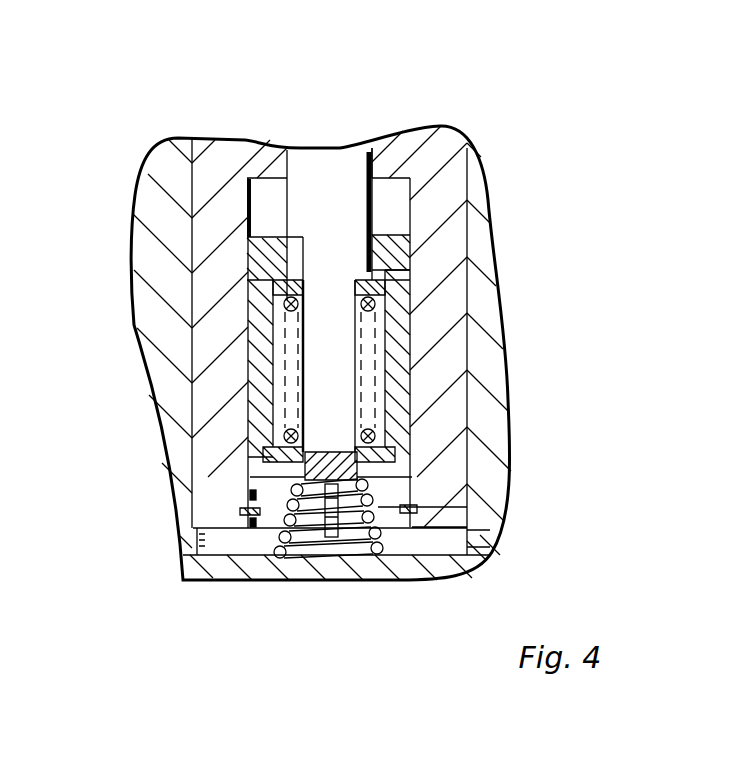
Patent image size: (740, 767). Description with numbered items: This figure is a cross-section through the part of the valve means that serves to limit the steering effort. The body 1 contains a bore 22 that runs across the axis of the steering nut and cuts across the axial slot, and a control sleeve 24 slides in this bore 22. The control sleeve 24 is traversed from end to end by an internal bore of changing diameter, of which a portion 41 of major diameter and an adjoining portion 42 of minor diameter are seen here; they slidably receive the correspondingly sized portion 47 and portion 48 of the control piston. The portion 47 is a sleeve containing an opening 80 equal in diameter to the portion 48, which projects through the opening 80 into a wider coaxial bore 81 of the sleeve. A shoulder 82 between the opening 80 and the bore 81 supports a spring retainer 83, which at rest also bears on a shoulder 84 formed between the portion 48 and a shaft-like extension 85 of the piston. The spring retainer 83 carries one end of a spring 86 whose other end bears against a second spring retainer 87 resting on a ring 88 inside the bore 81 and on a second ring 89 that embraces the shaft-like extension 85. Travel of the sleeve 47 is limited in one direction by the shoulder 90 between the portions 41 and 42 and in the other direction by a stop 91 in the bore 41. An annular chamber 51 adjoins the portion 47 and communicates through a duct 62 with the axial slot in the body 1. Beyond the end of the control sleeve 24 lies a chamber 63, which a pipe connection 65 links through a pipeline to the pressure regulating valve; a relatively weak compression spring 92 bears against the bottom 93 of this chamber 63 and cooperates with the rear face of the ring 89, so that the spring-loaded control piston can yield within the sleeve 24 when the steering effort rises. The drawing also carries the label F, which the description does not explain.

The body 1 is at (223, 570).
The bore 22 is at (468, 297).
The control sleeve 24 is at (452, 157).
The portion of major diameter 41 is at (414, 255).
The portion of minor diameter 42 is at (372, 165).
The sleeve portion of control piston 47 is at (398, 452).
The portion of control piston 48 is at (335, 175).
The annular chamber 51 is at (270, 187).
The duct 62 is at (402, 135).
The chamber 63 is at (263, 545).
The pipe connection 65 is at (490, 538).
The opening 80 is at (376, 262).
The bore 81 is at (391, 377).
The shoulder 82 is at (265, 280).
The spring retainer 83 is at (288, 289).
The shoulder 84 is at (298, 270).
The shaft-like extension 85 is at (317, 378).
The spring 86 is at (285, 303).
The spring retainer 87 is at (262, 450).
The ring 88 is at (300, 468).
The second ring 89 is at (258, 472).
The shoulder 90 is at (262, 176).
The stop 91 is at (418, 508).
The compression spring 92 is at (390, 560).
The bottom of chamber 93 is at (353, 553).
The pressure chamber F is at (392, 208).